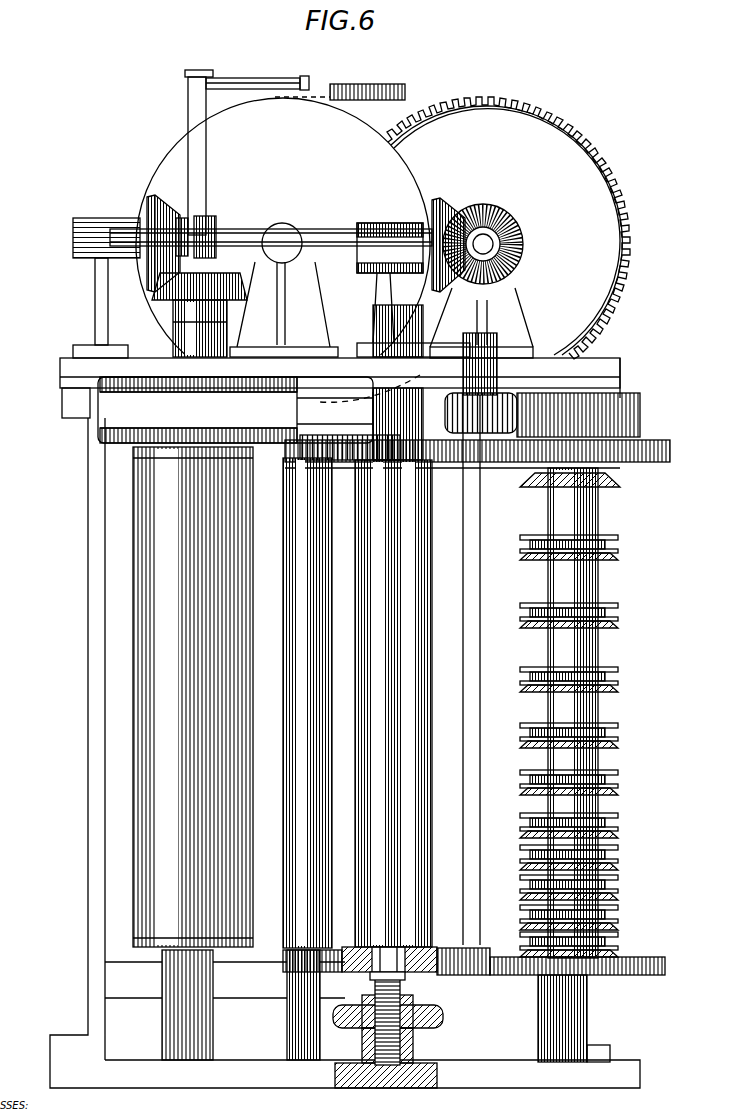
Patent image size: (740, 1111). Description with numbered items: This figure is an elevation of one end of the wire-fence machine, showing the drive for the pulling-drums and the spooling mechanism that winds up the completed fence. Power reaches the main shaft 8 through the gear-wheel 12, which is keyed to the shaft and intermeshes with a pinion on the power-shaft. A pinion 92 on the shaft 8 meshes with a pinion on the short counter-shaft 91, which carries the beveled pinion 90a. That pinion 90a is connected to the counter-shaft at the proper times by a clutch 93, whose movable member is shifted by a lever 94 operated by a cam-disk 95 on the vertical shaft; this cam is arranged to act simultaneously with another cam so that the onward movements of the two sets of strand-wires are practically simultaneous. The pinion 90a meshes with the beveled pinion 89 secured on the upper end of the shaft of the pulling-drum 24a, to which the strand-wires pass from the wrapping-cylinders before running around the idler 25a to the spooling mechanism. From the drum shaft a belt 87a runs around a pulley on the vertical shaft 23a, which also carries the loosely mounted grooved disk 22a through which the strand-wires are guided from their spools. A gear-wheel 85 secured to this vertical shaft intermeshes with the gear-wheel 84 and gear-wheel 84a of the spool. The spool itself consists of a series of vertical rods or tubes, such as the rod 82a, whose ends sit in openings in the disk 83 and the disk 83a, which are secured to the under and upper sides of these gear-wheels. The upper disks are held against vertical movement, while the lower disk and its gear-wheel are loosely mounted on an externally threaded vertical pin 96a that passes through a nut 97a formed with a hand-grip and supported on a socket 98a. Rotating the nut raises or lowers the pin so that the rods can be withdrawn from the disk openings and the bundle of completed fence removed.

The gear-wheel 12 is at (508, 228).
The shaft 8 is at (486, 246).
The lever 94 is at (205, 160).
The cam-disk 95 is at (405, 92).
The counter-shaft 91 is at (315, 235).
The clutch 93 is at (215, 232).
The beveled pinion 89 is at (148, 280).
The pinion 90a is at (172, 190).
The pinion 92 is at (443, 206).
The belt 87a is at (369, 410).
The gear-wheel 84 is at (355, 462).
The gear-wheel 85 is at (683, 968).
The pulling-drum 24a is at (145, 648).
The idler 25a is at (292, 605).
The vertical rod 82a is at (400, 595).
The disk 83 is at (447, 462).
The disk 83a is at (478, 943).
The vertical shaft 23a is at (592, 652).
The grooved disk 22a is at (620, 789).
The gear-wheel 84a is at (290, 966).
The vertical pin 96a is at (408, 988).
The nut 97a is at (443, 1009).
The socket 98a is at (414, 1046).